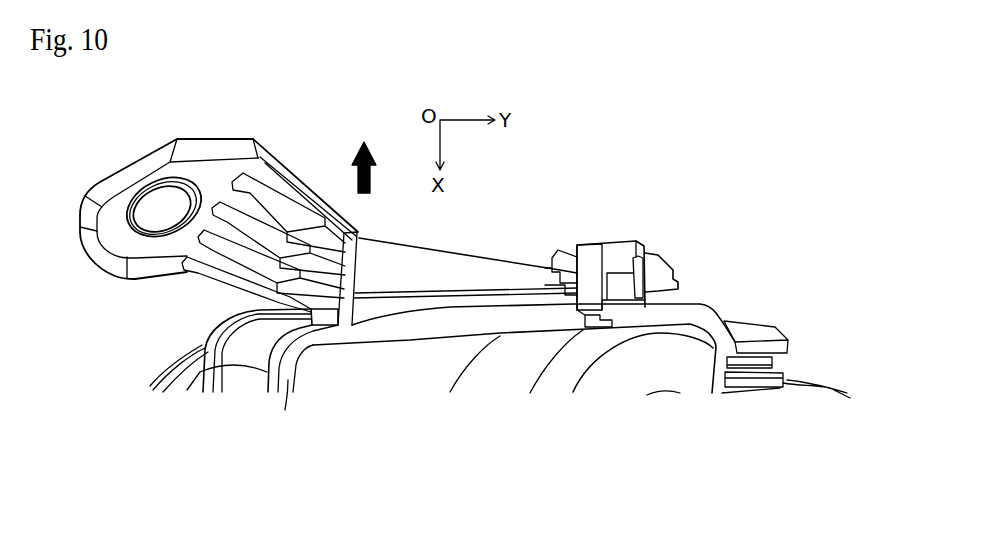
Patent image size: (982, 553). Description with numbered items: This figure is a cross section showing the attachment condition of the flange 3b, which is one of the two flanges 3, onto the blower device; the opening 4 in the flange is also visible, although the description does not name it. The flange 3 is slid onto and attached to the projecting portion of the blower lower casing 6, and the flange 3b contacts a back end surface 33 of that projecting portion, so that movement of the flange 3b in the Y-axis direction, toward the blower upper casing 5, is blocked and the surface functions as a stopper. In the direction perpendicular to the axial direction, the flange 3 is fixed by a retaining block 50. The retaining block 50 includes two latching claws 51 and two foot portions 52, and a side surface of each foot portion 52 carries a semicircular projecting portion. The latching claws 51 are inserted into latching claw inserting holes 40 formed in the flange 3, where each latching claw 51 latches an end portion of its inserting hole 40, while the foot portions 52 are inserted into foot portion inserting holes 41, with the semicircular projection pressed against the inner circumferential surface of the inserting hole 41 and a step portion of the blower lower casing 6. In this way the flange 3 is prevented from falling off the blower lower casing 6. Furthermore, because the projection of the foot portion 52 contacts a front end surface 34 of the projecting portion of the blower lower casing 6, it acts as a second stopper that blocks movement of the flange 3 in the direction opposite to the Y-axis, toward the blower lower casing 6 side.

The flange 3 is at (389, 262).
The flange 3b is at (313, 148).
The through hole 4 is at (161, 198).
The blower upper casing 5 is at (740, 387).
The blower lower casing 6 is at (290, 383).
The back end surface 33 is at (353, 325).
The front end surface 34 is at (575, 311).
The latching claw inserting hole 40 is at (683, 257).
The foot portion inserting hole 41 is at (565, 254).
The retaining block 50 is at (622, 244).
The latching claw 51 is at (648, 272).
The foot portion 52 is at (597, 293).